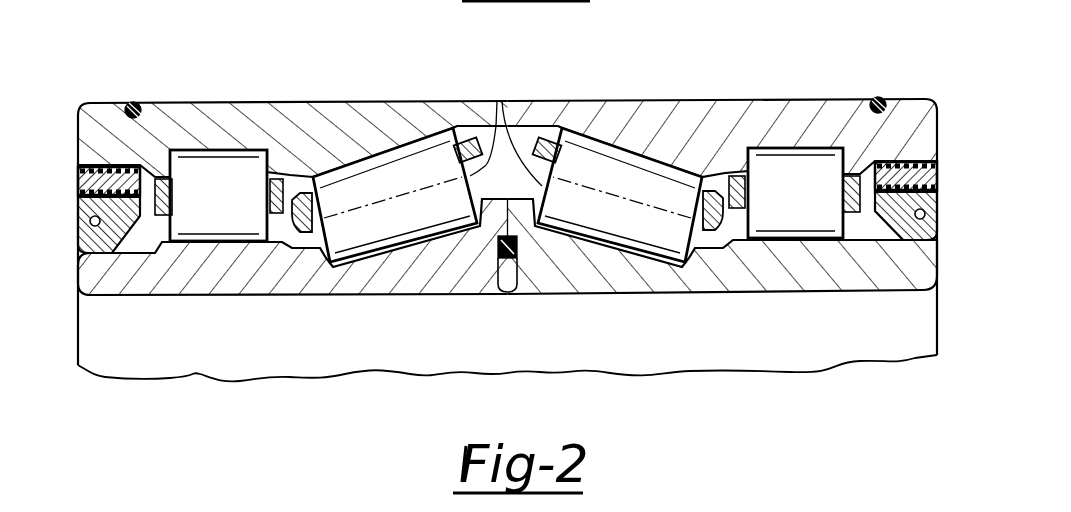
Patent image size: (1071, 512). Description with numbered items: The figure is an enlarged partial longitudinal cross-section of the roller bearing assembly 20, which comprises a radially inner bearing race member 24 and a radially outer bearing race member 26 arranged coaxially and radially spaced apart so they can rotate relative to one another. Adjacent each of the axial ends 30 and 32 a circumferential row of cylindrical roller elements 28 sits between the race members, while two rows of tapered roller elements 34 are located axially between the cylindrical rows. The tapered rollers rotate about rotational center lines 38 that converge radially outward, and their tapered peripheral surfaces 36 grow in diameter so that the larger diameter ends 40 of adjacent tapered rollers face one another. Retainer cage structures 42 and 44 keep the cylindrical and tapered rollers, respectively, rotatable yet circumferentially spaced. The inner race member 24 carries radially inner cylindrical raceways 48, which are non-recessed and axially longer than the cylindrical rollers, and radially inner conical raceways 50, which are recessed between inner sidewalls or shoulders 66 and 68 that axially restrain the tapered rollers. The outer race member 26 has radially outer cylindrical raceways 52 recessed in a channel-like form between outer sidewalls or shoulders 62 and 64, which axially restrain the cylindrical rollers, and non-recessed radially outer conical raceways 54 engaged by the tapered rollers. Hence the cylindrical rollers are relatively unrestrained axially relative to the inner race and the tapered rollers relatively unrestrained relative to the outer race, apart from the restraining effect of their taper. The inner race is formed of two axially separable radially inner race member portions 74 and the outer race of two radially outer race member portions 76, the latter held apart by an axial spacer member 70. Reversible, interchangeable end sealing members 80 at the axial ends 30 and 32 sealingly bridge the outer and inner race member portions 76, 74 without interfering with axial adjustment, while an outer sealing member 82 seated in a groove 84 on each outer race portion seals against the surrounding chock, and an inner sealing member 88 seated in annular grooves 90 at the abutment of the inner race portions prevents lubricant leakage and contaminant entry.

The roller bearing assembly 20 is at (720, 67).
The radially inner bearing race member 24 is at (328, 294).
The radially outer bearing race member 26 is at (392, 101).
The cylindrical roller elements 28 is at (205, 270).
The axial end 30 is at (71, 124).
The axial end 32 is at (937, 128).
The tapered roller elements 34 is at (385, 250).
The tapered peripheral surfaces 36 is at (435, 245).
The rotational center lines 38 is at (330, 192).
The larger diameter ends 40 is at (497, 101).
The retainer cage structure 42 is at (162, 216).
The retainer cage structure 44 is at (292, 168).
The radially inner cylindrical raceways 48 is at (240, 243).
The radially inner conical raceways 50 is at (342, 262).
The radially outer cylindrical raceways 52 is at (214, 150).
The radially outer conical raceways 54 is at (360, 162).
The outer sidewall or shoulder 62 is at (262, 152).
The outer sidewall or shoulder 64 is at (172, 148).
The inner sidewall or shoulder 66 is at (513, 309).
The inner sidewall or shoulder 68 is at (305, 232).
The axial spacer member 70 is at (530, 112).
The radially inner race member portions 74 is at (215, 243).
The radially outer race member portions 76 is at (428, 118).
The end sealing member 80 is at (105, 255).
The outer sealing member 82 is at (135, 102).
The groove 84 is at (145, 102).
The inner sealing member 88 is at (495, 272).
The annular grooves 90 is at (492, 262).